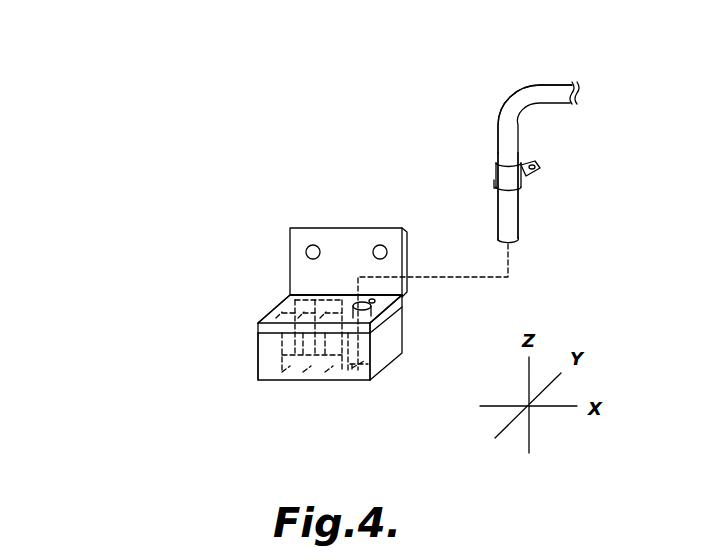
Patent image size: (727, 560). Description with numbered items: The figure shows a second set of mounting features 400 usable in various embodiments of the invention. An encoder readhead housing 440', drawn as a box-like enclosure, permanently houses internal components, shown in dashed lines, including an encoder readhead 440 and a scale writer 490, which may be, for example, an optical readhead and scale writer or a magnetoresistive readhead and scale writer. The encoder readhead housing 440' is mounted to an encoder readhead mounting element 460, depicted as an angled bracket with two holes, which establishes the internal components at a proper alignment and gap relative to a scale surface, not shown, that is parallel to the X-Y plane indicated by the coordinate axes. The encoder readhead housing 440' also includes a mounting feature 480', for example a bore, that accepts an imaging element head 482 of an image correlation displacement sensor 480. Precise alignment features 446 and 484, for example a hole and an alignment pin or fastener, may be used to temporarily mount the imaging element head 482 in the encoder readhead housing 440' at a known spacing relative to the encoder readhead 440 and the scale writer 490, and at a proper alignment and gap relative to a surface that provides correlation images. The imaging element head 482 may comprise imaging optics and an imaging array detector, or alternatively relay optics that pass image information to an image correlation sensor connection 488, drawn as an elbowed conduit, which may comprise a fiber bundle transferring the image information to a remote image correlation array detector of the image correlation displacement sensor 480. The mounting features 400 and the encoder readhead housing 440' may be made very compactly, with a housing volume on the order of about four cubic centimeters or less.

The second set of mounting features 400 is at (78, 163).
The encoder readhead 440 is at (329, 371).
The encoder readhead housing 440' is at (249, 324).
The precise alignment feature 446 is at (385, 302).
The encoder readhead mounting element 460 is at (370, 228).
The image correlation displacement sensor 480 is at (515, 150).
The mounting feature 480' is at (388, 362).
The imaging element head 482 is at (520, 205).
The precise alignment feature 484 is at (538, 175).
The image correlation sensor connection 488 is at (524, 110).
The scale writer 490 is at (320, 380).